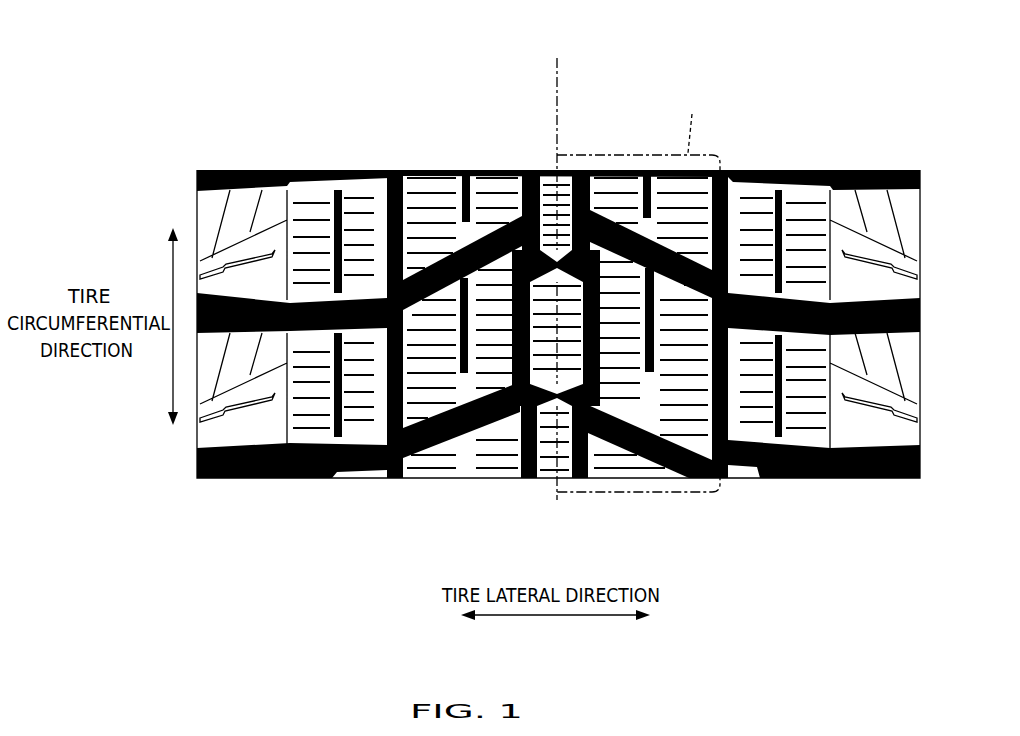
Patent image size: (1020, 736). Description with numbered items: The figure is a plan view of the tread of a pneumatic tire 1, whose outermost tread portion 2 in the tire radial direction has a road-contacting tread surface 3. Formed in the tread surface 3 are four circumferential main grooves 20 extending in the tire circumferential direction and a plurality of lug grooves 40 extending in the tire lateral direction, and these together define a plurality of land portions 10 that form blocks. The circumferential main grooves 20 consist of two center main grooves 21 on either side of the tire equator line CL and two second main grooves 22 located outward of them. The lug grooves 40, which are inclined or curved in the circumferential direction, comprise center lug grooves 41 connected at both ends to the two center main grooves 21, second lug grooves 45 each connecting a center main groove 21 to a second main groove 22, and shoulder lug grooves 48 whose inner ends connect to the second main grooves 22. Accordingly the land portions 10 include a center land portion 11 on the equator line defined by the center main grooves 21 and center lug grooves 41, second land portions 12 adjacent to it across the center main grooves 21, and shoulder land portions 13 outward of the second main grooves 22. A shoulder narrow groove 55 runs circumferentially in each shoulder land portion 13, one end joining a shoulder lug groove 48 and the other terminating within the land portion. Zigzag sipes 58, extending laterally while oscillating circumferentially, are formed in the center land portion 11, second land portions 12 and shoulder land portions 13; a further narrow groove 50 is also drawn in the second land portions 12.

The pneumatic tire 1 is at (316, 60).
The tread portion 2 is at (752, 190).
The tread surface 3 is at (558, 327).
The land portions 10 is at (558, 291).
The center land portion 11 is at (547, 180).
The second land portions 12 is at (435, 192).
The shoulder land portions 13 is at (313, 205).
The circumferential main grooves 20 is at (570, 280).
The center main grooves 21 is at (527, 182).
The second main grooves 22 is at (392, 190).
The lug grooves 40 is at (558, 371).
The center lug grooves 41 is at (568, 395).
The second lug grooves 45 is at (433, 430).
The shoulder lug grooves 48 is at (300, 462).
The narrow groove 50 is at (471, 462).
The shoulder narrow groove 55 is at (341, 418).
The sipes 58 is at (508, 455).